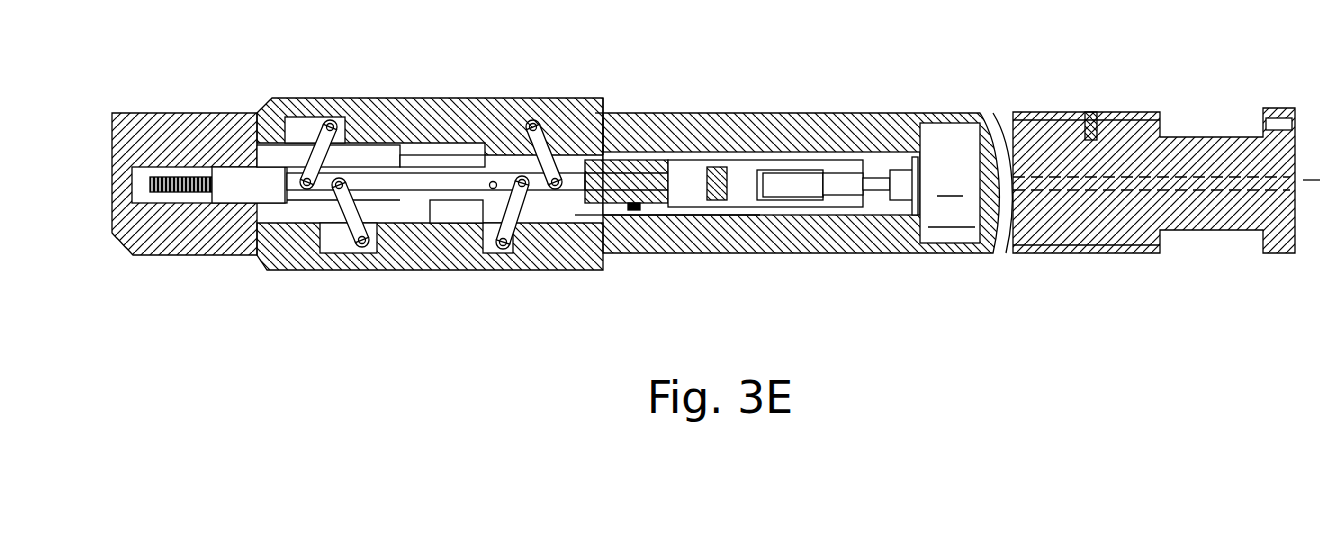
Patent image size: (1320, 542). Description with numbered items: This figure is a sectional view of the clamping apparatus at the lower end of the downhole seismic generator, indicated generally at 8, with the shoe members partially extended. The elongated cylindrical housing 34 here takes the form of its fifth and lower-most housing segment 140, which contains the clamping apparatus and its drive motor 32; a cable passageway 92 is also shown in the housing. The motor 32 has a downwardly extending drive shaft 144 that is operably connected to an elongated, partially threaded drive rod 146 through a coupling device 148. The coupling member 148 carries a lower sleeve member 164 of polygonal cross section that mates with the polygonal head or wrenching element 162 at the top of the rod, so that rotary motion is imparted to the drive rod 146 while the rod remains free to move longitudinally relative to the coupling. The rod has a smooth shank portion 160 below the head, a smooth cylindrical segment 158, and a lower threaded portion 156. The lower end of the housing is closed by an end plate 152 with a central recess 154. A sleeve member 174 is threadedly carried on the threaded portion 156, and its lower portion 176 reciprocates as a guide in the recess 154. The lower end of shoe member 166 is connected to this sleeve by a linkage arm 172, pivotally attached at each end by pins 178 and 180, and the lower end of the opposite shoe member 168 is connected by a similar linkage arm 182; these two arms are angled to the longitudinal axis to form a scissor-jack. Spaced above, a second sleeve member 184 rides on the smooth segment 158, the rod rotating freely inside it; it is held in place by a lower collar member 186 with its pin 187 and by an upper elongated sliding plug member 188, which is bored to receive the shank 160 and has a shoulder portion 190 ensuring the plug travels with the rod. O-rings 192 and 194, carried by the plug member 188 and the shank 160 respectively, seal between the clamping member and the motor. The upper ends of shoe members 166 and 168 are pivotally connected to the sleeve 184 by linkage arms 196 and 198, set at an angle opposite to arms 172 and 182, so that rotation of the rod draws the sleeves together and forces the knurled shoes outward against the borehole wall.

The valve assembly 8 is at (606, 93).
The drive motor 32 is at (950, 183).
The elongated cylindrical housing 34 is at (825, 112).
The cable passageway 92 is at (1214, 170).
The lower-most housing segment 140 is at (684, 262).
The drive shaft 144 is at (913, 253).
The drive rod 146 is at (435, 207).
The coupling device 148 is at (772, 212).
The end plate 152 is at (165, 120).
The recess 154 is at (112, 185).
The threaded portion 156 is at (385, 195).
The smooth segment 158 is at (468, 150).
The smooth shank portion 160 is at (680, 160).
The wrenching element 162 is at (740, 168).
The lower sleeve member 164 is at (772, 168).
The shoe member 166 is at (375, 103).
The shoe member 168 is at (300, 272).
The linkage arm 172 is at (287, 118).
The sleeve member 174 is at (293, 200).
The lower portion 176 is at (235, 200).
The pin 178 is at (325, 118).
The pin 180 is at (258, 148).
The linkage arm 182 is at (322, 263).
The sleeve member 184 is at (582, 265).
The lower collar member 186 is at (505, 143).
The pin 187 is at (490, 265).
The sliding plug member 188 is at (603, 98).
The shoulder portion 190 is at (606, 262).
The O-ring 192 is at (650, 262).
The O-ring 194 is at (626, 158).
The linkage arm 196 is at (572, 150).
The linkage arm 198 is at (540, 265).